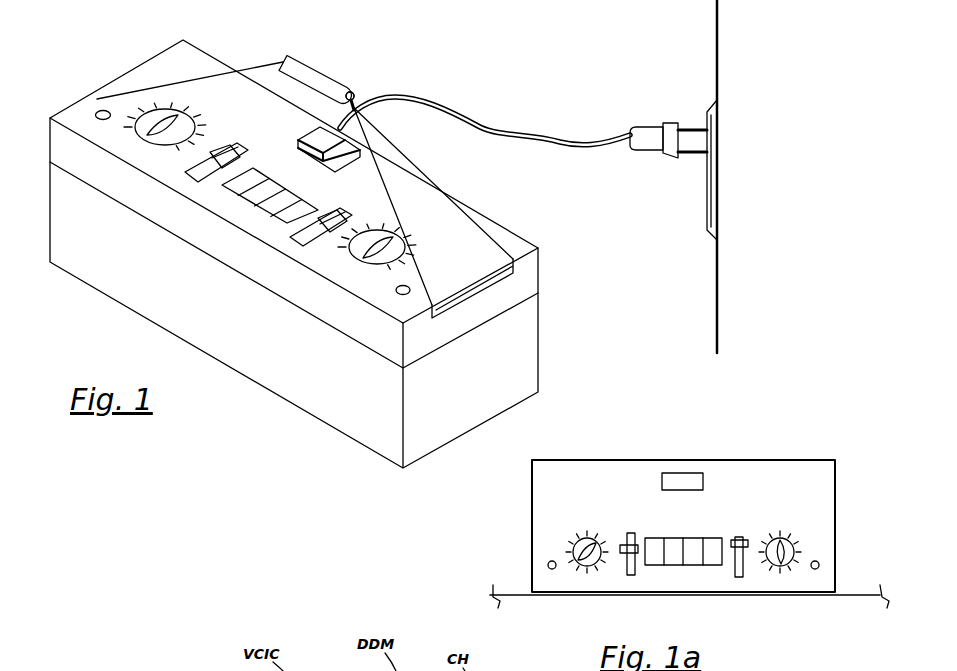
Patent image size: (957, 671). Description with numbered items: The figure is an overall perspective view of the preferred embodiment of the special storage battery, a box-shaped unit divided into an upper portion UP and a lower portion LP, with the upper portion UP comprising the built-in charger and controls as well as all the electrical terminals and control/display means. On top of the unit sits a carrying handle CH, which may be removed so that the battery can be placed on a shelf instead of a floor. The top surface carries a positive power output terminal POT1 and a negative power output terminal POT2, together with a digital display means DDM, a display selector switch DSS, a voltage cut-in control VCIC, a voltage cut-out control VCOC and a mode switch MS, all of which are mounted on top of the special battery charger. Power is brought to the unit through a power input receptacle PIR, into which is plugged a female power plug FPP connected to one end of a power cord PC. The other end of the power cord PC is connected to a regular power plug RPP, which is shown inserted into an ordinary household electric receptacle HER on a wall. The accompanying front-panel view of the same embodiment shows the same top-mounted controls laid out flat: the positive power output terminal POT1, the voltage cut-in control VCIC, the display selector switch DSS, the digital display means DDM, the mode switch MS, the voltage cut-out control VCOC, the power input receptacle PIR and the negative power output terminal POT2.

In FIG. 1, the positive power output terminal POT1 is at (101, 108).
In FIG. 1a, the positive power output terminal POT1 is at (547, 562).
In FIG. 1, the voltage cut-in control VCIC is at (173, 112).
In FIG. 1a, the voltage cut-in control VCIC is at (577, 540).
In FIG. 1, the digital display means DDM is at (263, 173).
In FIG. 1a, the digital display means DDM is at (677, 538).
In FIG. 1, the carrying handle CH is at (326, 70).
In FIG. 1, the female power plug FPP is at (355, 104).
In FIG. 1a, the female power plug FPP is at (683, 526).
In FIG. 1, the power cord PC is at (513, 132).
In FIG. 1, the regular power plug RPP is at (663, 123).
In FIG. 1, the display selector switch DSS is at (242, 145).
In FIG. 1a, the display selector switch DSS is at (628, 533).
In FIG. 1, the power input receptacle PIR is at (347, 131).
In FIG. 1a, the power input receptacle PIR is at (687, 473).
In FIG. 1, the mode switch MS is at (393, 231).
In FIG. 1a, the mode switch MS is at (740, 537).
In FIG. 1, the voltage cut-out control VCOC is at (346, 217).
In FIG. 1a, the voltage cut-out control VCOC is at (795, 537).
In FIG. 1, the negative power output terminal POT2 is at (408, 284).
In FIG. 1a, the negative power output terminal POT2 is at (818, 560).
In FIG. 1, the household electric receptacle HER is at (698, 203).
In FIG. 1, the upper portion UP is at (294, 204).
In FIG. 1, the lower portion LP is at (294, 315).